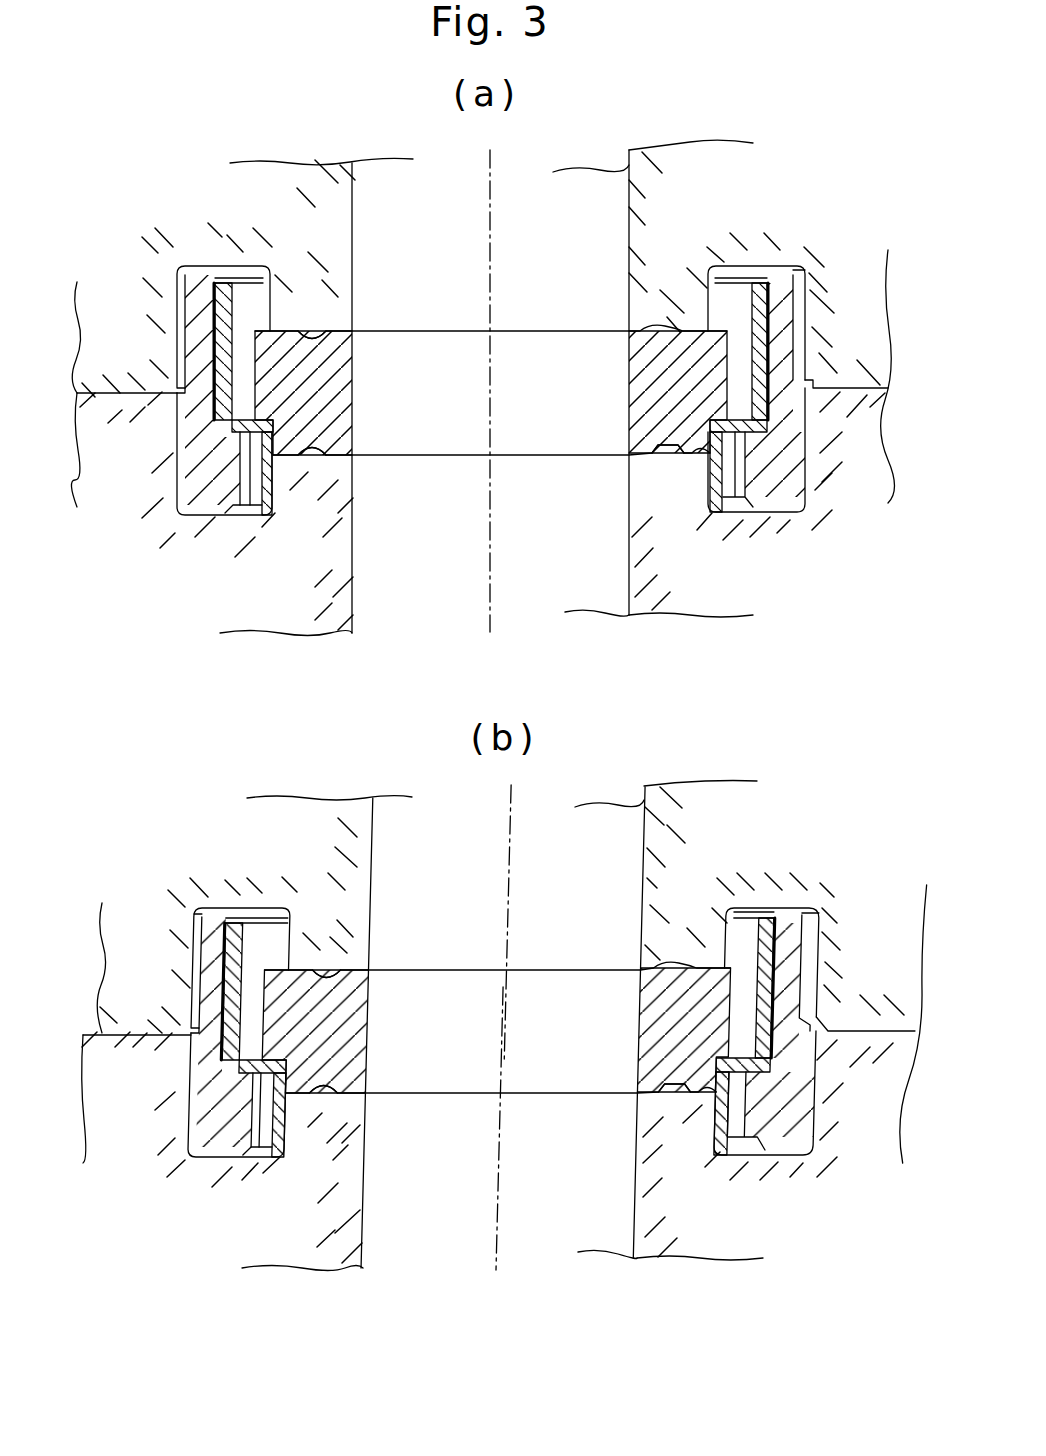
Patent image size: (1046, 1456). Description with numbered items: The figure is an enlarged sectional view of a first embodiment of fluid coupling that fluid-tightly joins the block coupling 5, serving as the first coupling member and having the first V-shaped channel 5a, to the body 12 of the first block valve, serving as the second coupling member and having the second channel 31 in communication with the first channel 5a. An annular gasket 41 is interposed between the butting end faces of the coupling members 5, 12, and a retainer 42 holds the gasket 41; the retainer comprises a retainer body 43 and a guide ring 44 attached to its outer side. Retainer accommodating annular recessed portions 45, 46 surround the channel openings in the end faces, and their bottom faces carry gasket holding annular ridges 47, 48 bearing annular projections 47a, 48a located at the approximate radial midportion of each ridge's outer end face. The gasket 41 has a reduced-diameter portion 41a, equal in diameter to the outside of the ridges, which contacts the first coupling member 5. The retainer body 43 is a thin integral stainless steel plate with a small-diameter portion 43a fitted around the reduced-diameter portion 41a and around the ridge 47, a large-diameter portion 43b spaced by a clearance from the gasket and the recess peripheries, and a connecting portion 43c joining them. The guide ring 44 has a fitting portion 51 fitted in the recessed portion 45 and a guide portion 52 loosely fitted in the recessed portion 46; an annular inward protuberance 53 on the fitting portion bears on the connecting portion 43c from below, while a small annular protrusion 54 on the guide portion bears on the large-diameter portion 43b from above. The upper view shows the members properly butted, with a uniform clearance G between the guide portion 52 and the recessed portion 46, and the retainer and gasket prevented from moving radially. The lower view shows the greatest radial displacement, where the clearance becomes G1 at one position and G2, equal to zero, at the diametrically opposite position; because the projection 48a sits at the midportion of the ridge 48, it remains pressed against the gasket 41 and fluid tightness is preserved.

The block coupling 5 is at (683, 598).
The first V-shaped channel 5a is at (628, 580).
The body of the first block valve 12 is at (660, 165).
The second channel 31 is at (620, 172).
The annular gasket 41 is at (653, 330).
The reduced-diameter portion of the gasket 41a is at (690, 450).
The retainer 42 is at (785, 285).
The retainer body 43 is at (717, 507).
The small-diameter portion 43a is at (277, 497).
The large-diameter portion 43b is at (235, 318).
The connecting portion 43c is at (248, 513).
The guide ring 44 is at (780, 493).
The recessed portion of the first coupling member 45 is at (185, 440).
The recessed portion of the second coupling member 46 is at (177, 355).
The annular ridge of the first coupling member 47 is at (325, 497).
The annular projection of the first ridge 47a is at (318, 457).
The annular ridge of the second coupling member 48 is at (330, 287).
The annular projection of the second ridge 48a is at (322, 330).
The fitting portion 51 is at (190, 477).
The guide portion 52 is at (200, 320).
The annular inward protuberance 53 is at (210, 495).
The small annular protrusion 54 is at (210, 272).
The clearance G is at (800, 327).
The clearance at greatest displacement G1 is at (805, 972).
The clearance opposite G1 G2 is at (190, 970).